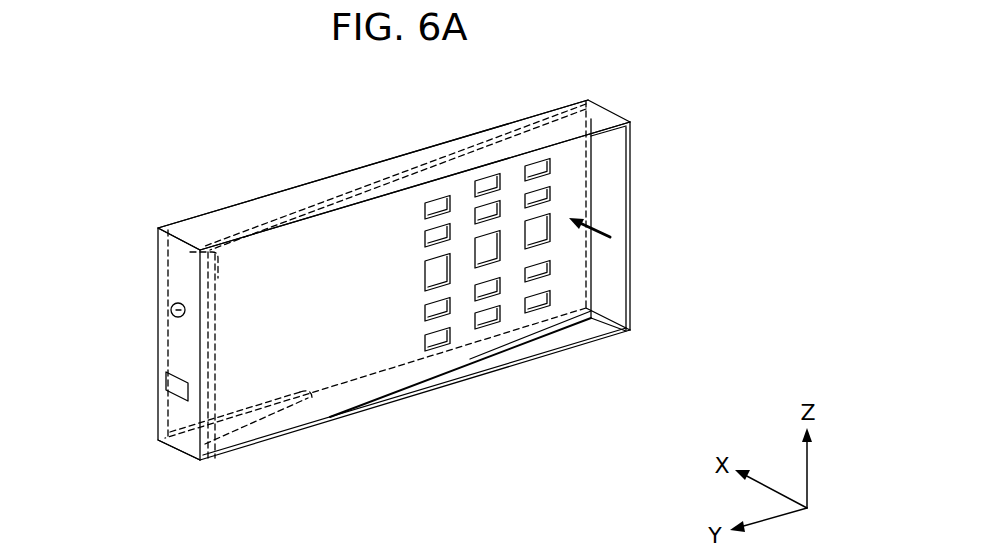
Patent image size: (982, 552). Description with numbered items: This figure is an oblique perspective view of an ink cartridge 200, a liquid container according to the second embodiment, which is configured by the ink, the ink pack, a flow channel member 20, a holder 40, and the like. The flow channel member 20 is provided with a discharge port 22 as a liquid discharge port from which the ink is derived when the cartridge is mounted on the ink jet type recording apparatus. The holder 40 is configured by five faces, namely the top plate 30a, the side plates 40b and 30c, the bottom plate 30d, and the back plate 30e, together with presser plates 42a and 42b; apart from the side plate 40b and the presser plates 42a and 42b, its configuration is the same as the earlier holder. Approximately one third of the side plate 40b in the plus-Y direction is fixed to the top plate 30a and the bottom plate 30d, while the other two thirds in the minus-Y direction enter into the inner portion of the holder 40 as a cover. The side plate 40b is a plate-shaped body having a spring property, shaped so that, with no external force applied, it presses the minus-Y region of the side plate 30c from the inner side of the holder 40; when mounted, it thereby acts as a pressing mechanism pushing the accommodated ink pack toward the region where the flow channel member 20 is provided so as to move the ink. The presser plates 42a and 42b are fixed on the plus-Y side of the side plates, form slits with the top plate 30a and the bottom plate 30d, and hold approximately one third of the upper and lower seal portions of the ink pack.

The ink cartridge 200 is at (218, 127).
The flow channel member 20 is at (178, 271).
The discharge port 22 is at (171, 310).
The top plate 30a is at (352, 182).
The side plate 30c is at (523, 112).
The bottom plate 30d is at (228, 457).
The back plate 30e is at (631, 329).
The holder 40 is at (662, 220).
The side plate 40b is at (392, 312).
The presser plate 42a is at (263, 228).
The presser plate 42b is at (272, 410).